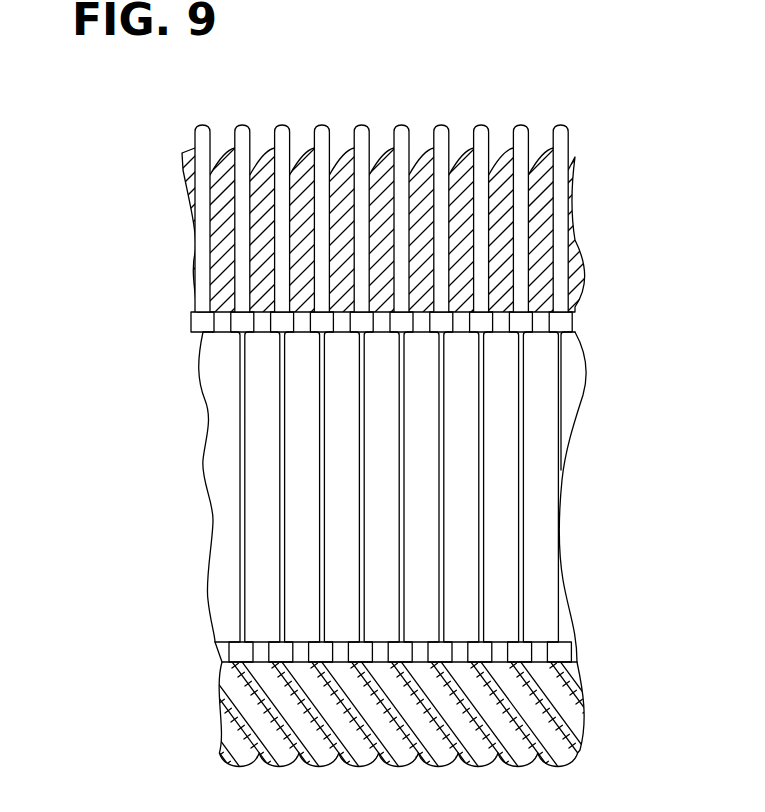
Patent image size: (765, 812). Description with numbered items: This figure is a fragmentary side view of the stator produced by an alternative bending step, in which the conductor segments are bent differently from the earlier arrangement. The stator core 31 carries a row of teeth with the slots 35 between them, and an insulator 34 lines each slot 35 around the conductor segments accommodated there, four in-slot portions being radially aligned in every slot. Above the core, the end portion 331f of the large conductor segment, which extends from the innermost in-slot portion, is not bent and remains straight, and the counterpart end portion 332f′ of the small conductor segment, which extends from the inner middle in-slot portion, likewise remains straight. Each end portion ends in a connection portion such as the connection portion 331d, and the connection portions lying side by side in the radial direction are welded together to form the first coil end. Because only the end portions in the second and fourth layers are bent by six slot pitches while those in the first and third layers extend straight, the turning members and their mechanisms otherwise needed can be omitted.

The end portion 332f′ is at (457, 155).
The connection portion 331d is at (483, 178).
The end portion 331f is at (485, 176).
The insulator 34 is at (562, 323).
The slot 35 is at (562, 408).
The stator core 31 is at (542, 452).